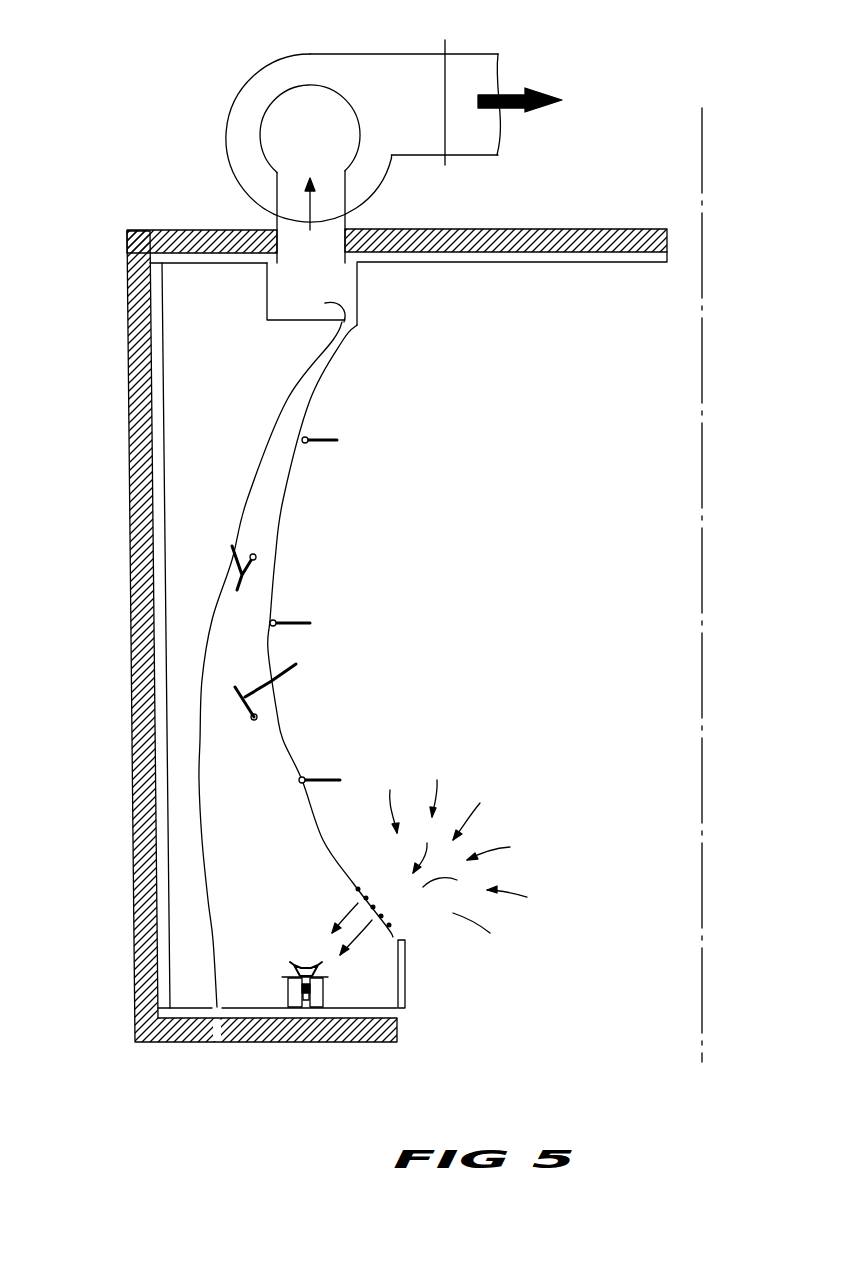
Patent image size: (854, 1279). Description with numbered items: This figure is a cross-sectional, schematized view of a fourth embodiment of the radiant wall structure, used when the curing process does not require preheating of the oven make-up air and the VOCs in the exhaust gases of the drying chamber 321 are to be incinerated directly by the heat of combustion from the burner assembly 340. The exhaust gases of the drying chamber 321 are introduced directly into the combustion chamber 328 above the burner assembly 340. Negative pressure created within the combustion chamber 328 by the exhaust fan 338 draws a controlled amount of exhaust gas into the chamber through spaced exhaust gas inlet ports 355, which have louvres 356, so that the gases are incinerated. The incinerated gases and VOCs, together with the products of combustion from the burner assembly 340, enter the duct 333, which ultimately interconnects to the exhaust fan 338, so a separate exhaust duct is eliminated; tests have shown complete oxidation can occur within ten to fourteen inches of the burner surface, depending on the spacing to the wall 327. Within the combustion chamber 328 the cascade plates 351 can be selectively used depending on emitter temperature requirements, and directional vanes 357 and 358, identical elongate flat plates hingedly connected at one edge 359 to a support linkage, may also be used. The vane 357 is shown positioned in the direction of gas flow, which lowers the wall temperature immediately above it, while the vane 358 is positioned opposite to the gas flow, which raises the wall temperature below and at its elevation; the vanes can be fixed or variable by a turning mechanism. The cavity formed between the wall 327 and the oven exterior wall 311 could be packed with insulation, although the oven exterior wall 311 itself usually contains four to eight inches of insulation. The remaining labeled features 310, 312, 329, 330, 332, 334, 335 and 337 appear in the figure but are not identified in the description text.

The filter apparatus 310 is at (112, 202).
The oven exterior wall 311 is at (140, 613).
The housing top wall 312 is at (217, 231).
The drying chamber 321 is at (662, 567).
The wall 327 is at (202, 760).
The combustion chamber 328 is at (303, 862).
The housing bottom wall 329 is at (253, 1013).
The filter belt 330 is at (340, 323).
The blower 332 is at (245, 80).
The duct 333 is at (267, 285).
The air flow direction 334 is at (192, 445).
The plenum right wall 335 is at (357, 283).
The blower inlet duct 337 is at (332, 245).
The exhaust fan 338 is at (330, 60).
The burner assembly 340 is at (285, 987).
The cascade plates 351 is at (337, 440).
The exhaust gas inlet ports 355 is at (393, 928).
The louvres 356 is at (390, 927).
The directional vane 357 is at (296, 664).
The directional vane 358 is at (232, 546).
The hinged edge 359 is at (253, 557).